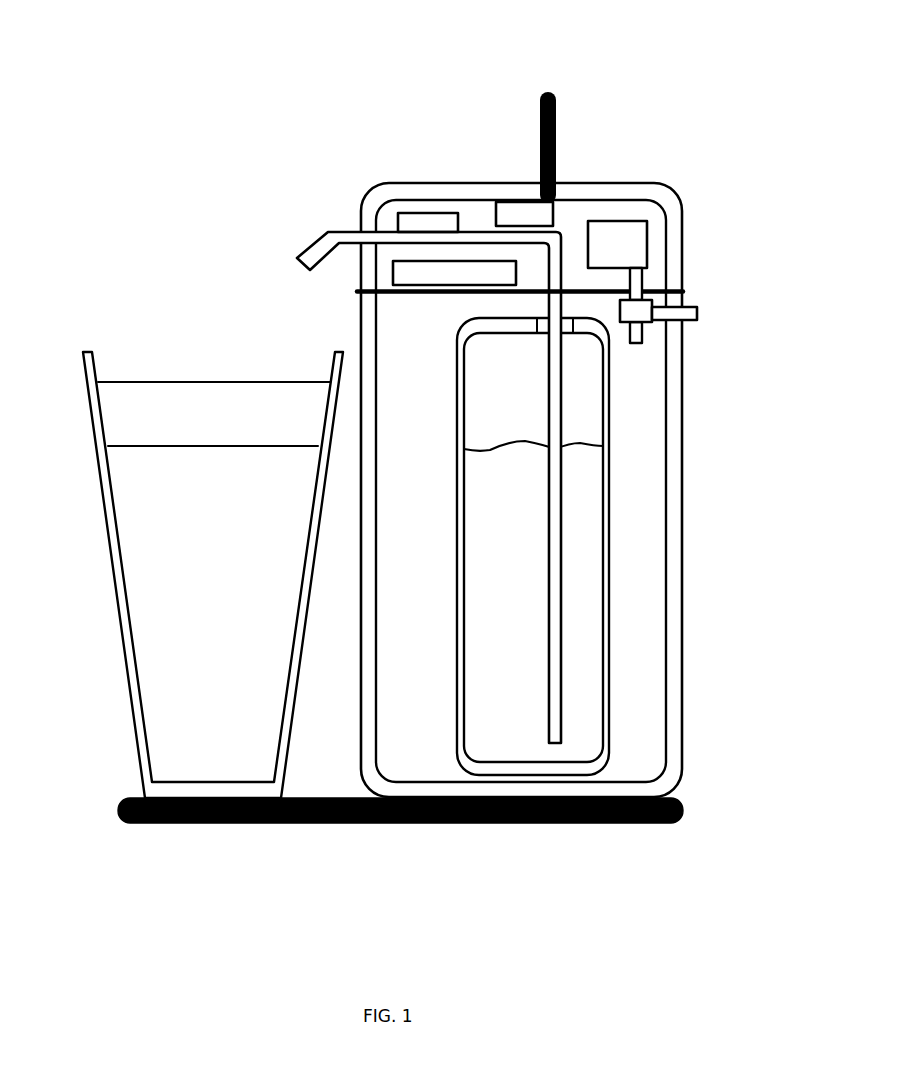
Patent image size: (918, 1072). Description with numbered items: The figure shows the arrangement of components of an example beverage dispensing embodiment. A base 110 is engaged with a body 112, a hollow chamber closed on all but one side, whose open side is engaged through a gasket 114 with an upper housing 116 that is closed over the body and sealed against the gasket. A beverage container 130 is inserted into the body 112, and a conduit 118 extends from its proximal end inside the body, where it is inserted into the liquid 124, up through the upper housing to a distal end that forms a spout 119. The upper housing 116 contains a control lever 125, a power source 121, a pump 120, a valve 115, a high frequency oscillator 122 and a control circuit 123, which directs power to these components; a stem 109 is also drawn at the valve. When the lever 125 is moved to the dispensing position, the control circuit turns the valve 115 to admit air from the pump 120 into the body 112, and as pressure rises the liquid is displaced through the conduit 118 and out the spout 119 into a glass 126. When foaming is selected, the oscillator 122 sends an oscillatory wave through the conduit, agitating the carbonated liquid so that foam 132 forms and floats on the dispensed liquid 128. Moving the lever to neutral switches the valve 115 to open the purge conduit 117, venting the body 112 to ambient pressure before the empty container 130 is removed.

The valve stem 109 is at (635, 295).
The base 110 is at (683, 807).
The body 112 is at (677, 483).
The gasket 114 is at (683, 291).
The valve 115 is at (637, 313).
The upper housing 116 is at (666, 200).
The purge conduit 117 is at (690, 313).
The conduit 118 is at (350, 232).
The spout 119 is at (283, 273).
The pump 120 is at (605, 240).
The power source 121 is at (412, 272).
The oscillator 122 is at (425, 217).
The control circuit 123 is at (508, 210).
The liquid 124 is at (577, 552).
The control lever 125 is at (548, 92).
The glass 126 is at (120, 615).
The dispensed liquid 128 is at (145, 505).
The beverage container 130 is at (605, 420).
The foam 132 is at (197, 410).